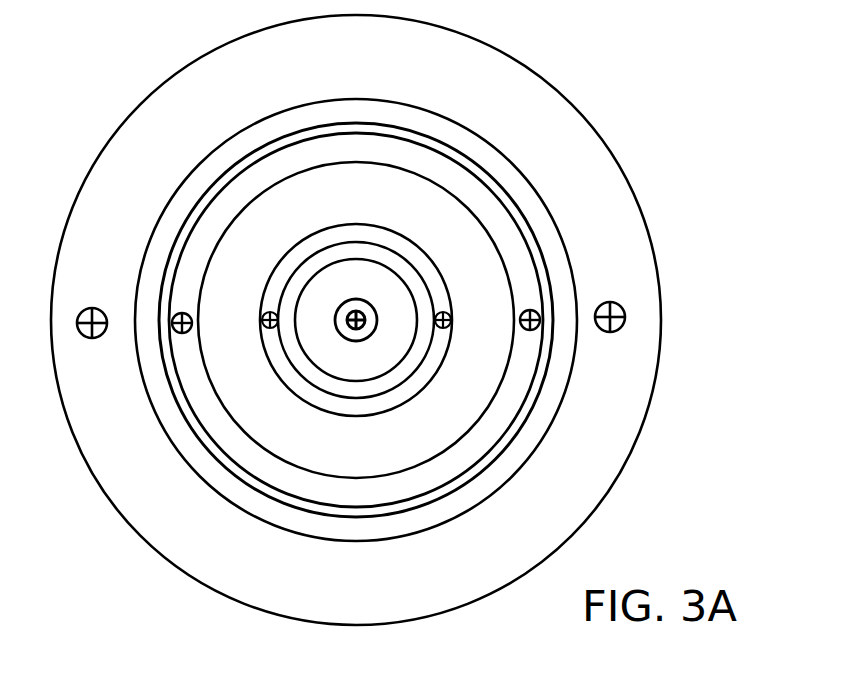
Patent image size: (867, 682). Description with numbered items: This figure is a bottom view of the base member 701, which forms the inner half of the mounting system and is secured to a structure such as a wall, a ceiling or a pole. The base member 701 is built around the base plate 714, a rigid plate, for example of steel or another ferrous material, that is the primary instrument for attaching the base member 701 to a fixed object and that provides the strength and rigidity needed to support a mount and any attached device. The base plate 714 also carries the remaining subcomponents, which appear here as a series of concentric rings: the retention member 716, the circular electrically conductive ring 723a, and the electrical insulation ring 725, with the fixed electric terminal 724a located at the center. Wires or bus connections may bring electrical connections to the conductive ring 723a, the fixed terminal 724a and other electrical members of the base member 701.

The base member 701 is at (619, 93).
The base plate 714 is at (623, 172).
The retention member 716 is at (570, 257).
The electrically conductive ring 723a is at (443, 372).
The fixed electric terminal 724a is at (368, 336).
The electrical insulation ring 725 is at (297, 354).